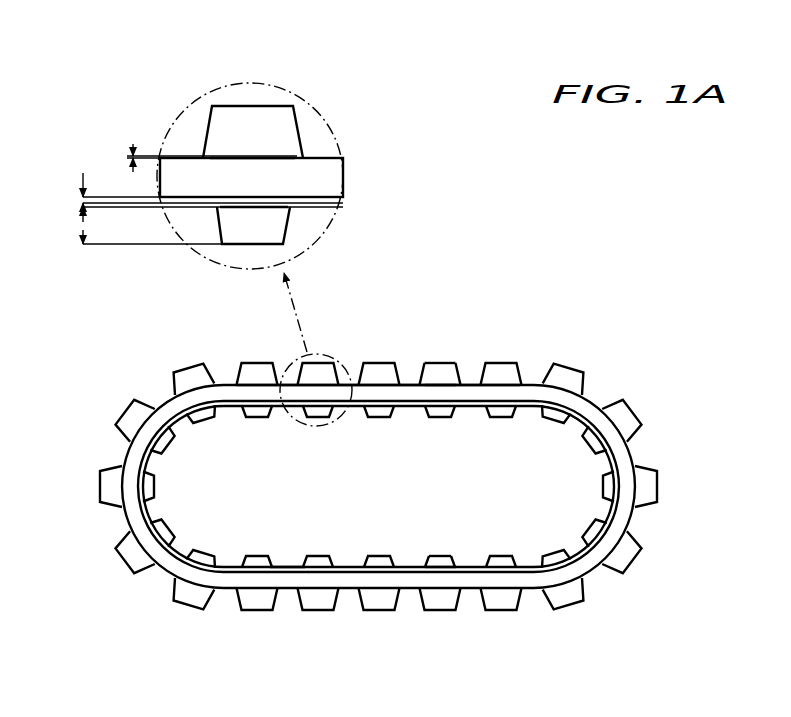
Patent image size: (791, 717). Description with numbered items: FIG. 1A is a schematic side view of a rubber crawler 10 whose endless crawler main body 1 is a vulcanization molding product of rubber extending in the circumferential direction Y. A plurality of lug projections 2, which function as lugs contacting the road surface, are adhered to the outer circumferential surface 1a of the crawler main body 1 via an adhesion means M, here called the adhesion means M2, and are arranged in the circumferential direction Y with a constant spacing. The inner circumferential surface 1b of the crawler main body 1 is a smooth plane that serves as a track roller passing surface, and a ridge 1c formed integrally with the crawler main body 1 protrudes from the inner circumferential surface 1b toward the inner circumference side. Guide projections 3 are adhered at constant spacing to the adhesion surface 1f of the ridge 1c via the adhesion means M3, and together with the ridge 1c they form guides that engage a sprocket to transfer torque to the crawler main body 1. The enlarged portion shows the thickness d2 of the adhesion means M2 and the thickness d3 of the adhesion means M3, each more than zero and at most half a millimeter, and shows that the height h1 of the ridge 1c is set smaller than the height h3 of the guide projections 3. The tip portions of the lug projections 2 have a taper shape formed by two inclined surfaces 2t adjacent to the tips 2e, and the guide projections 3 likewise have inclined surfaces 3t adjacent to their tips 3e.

The rubber crawler 10 is at (130, 370).
The crawler main body 1 is at (226, 383).
The lug projection 2 is at (258, 362).
The guide projection 3 is at (257, 418).
The outer circumferential surface 1a is at (476, 385).
The inner circumferential surface 1b is at (479, 570).
The ridge 1c is at (228, 570).
The adhesion surface 1f is at (288, 567).
The inclined surface 2t is at (420, 376).
The tip 2e is at (438, 363).
The inclined surface 3t is at (427, 562).
The tip 3e is at (441, 559).
The adhesion means M2 is at (276, 157).
The adhesion means M3 is at (267, 208).
The adhesion means M is at (440, 378).
The thickness of adhesion means d2 is at (132, 157).
The thickness of adhesion means d3 is at (83, 207).
The height of ridge h1 is at (83, 200).
The height of guide projection h3 is at (83, 236).
The circumferential direction Y is at (435, 297).